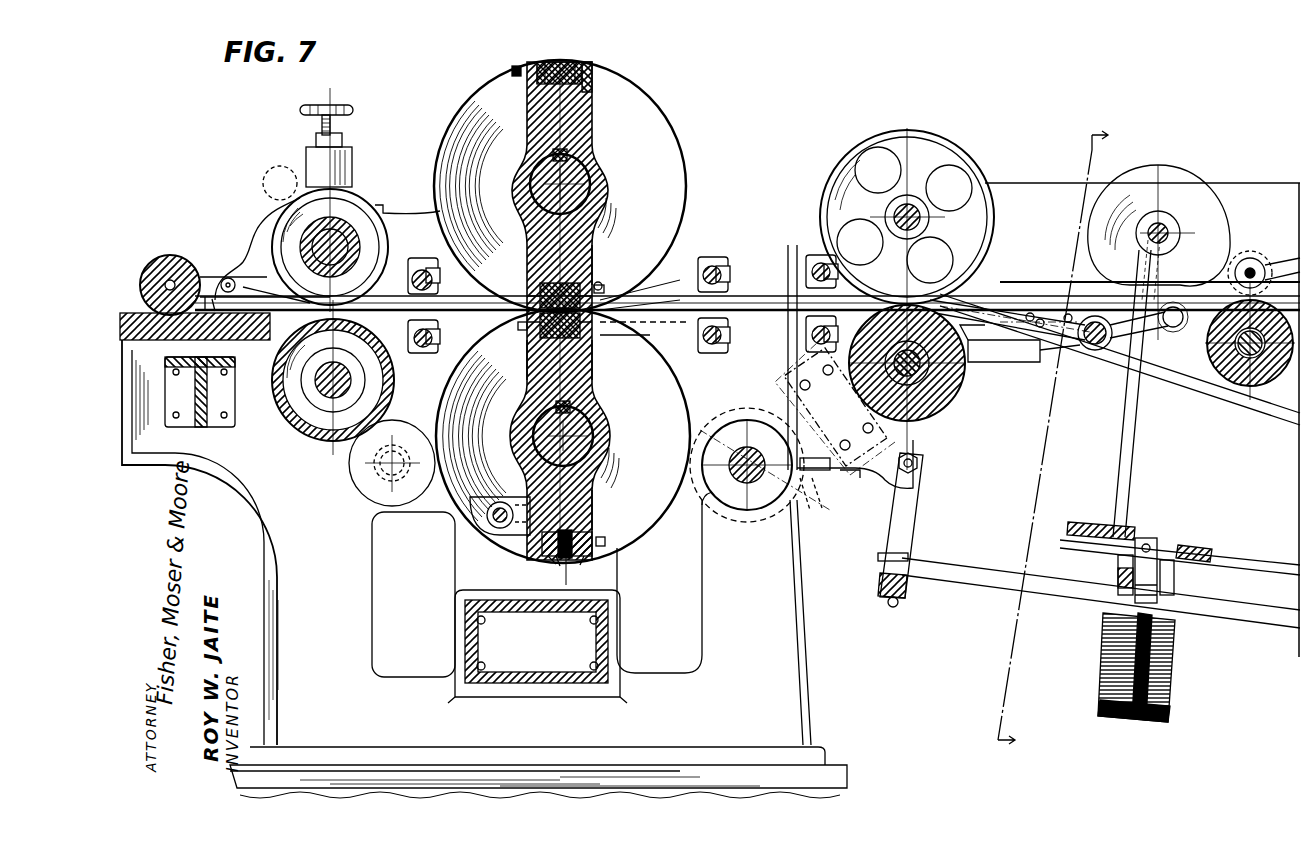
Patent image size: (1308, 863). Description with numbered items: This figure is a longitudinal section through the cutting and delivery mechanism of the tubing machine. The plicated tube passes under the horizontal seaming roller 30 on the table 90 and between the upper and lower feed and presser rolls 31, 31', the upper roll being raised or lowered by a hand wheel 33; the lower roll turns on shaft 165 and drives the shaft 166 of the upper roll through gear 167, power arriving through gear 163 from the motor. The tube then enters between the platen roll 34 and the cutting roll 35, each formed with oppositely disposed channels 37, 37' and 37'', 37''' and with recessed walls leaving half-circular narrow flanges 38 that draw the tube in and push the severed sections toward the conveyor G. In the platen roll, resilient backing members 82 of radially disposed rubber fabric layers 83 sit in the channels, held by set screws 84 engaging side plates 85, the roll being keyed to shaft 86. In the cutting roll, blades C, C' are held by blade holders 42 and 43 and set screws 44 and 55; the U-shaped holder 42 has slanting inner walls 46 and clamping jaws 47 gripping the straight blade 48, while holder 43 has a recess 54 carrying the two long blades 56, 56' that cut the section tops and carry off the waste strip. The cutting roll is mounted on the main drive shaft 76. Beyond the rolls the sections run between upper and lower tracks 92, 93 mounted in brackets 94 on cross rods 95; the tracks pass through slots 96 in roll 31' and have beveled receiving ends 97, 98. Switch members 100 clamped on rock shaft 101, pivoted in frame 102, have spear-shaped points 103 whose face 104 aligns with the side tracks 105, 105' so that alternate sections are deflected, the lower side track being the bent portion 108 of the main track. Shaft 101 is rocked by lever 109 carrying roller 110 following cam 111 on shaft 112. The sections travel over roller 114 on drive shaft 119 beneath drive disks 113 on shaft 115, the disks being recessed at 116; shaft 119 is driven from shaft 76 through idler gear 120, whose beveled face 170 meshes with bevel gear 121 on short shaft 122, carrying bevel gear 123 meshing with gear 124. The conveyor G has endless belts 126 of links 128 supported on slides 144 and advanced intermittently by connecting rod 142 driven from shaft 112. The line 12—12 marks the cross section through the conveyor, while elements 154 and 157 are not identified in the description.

The section line 12 is at (1063, 439).
The horizontal roller 30 is at (163, 278).
The upper feed and presser roll 31 is at (333, 200).
The lower feed and presser roll 31' is at (333, 377).
The hand wheel 33 is at (353, 110).
The platen roll 34 is at (652, 104).
The cutting roll 35 is at (680, 390).
The channel 37 is at (576, 308).
The channel 37' is at (608, 261).
The channel 37'' is at (619, 360).
The channel 37''' is at (613, 509).
The half-circular narrow flange 38 is at (686, 166).
The blade holder 42 is at (655, 340).
The blade holder 43 is at (522, 548).
The set screw 44 is at (527, 332).
The slanting inner side wall 46 is at (604, 287).
The clamping jaw 47 is at (540, 296).
The straight steel blade 48 is at (515, 360).
The recess 54 is at (593, 530).
The set screw 55 is at (606, 543).
The cutting blade 56 is at (547, 570).
The cutting blade 56' is at (621, 570).
The main drive shaft 76 is at (595, 433).
The resilient platen member 82 is at (577, 62).
The rubber fabric layer 83 is at (557, 62).
The set screw 84 is at (512, 71).
The side plate 85 is at (540, 64).
The shaft 86 is at (592, 183).
The table 90 is at (258, 340).
The upper track 92 is at (457, 296).
The lower track 93 is at (470, 312).
The bracket 94 is at (424, 259).
The cross rod 95 is at (417, 273).
The circumferential slot 96 is at (244, 283).
The beveled receiving end 97 is at (210, 300).
The beveled receiving end 98 is at (640, 292).
The switch member 100 is at (1060, 345).
The rock shaft 101 is at (1097, 350).
The frame 102 is at (1276, 243).
The switch point 103 is at (968, 296).
The face 104 is at (962, 284).
The upper side track 105 is at (1015, 361).
The lower side track 105' is at (985, 351).
The bent portion 108 is at (1047, 373).
The lever 109 is at (1140, 332).
The roller 110 is at (1120, 359).
The cam member 111 is at (1158, 175).
The rotatable shaft 112 is at (1168, 228).
The drive disk 113 is at (938, 165).
The roller 114 is at (958, 385).
The shaft 115 is at (908, 205).
The recess 116 is at (882, 138).
The drive shaft 119 is at (940, 412).
The idler gear 120 is at (752, 480).
The bevel gear 121 is at (819, 481).
The short shaft 122 is at (861, 485).
The bevel gear 123 is at (896, 524).
The bevel gear 124 is at (1101, 537).
The endless belt 126 is at (1159, 667).
The link 128 is at (1147, 538).
The connecting rod 142 is at (1135, 441).
The slide 144 is at (1078, 524).
The roller 154 is at (1262, 390).
The roller 157 is at (1256, 262).
The gear 163 is at (352, 490).
The shaft 165 is at (318, 385).
The shaft 166 is at (312, 244).
The gear 167 is at (280, 183).
The beveled toothed face 170 is at (825, 513).
The cutting blade C is at (645, 330).
The cutting blade C' is at (578, 570).
The conveyor G is at (1205, 545).